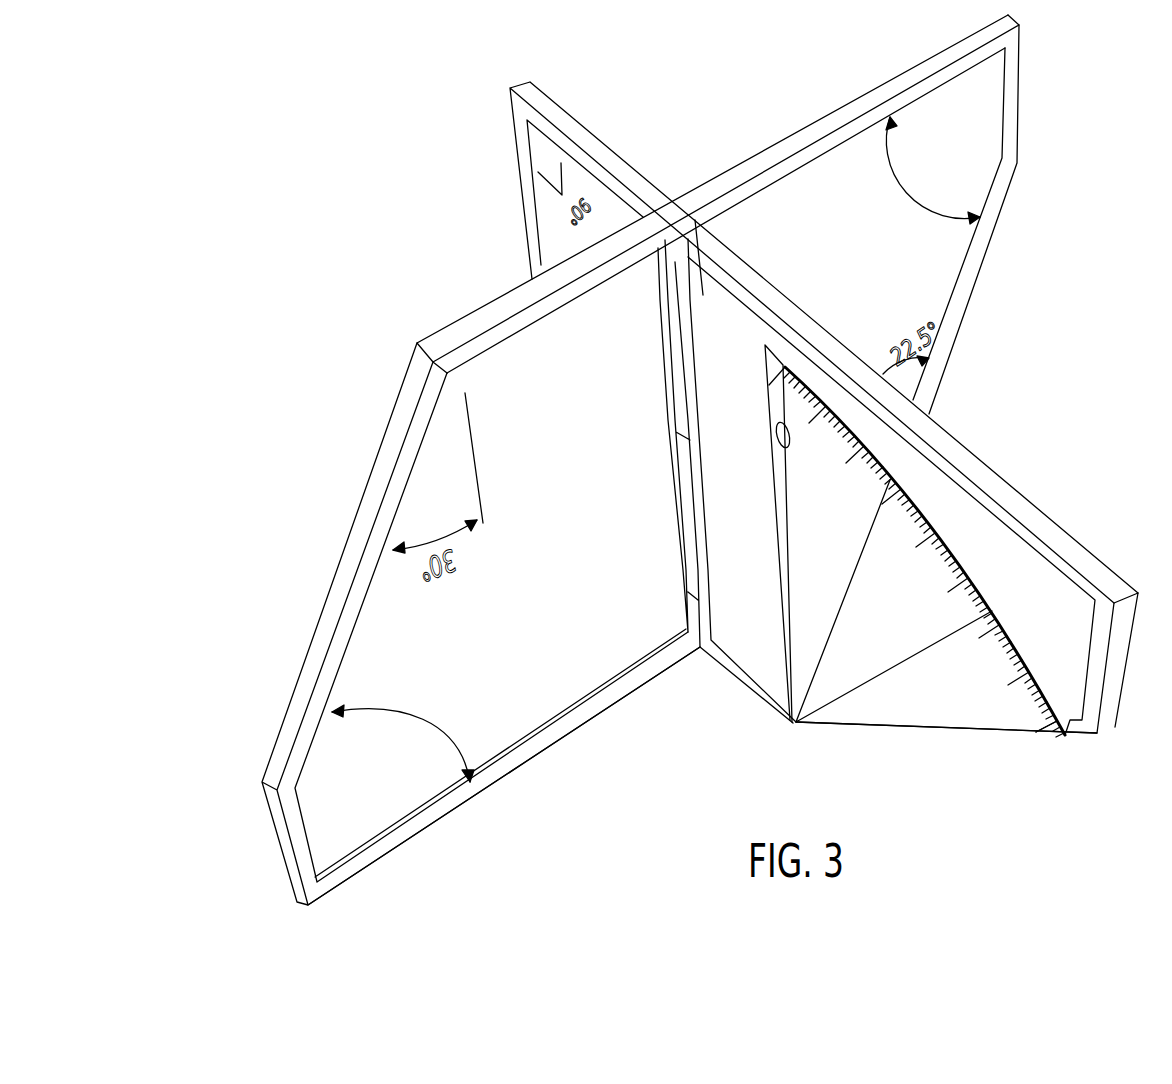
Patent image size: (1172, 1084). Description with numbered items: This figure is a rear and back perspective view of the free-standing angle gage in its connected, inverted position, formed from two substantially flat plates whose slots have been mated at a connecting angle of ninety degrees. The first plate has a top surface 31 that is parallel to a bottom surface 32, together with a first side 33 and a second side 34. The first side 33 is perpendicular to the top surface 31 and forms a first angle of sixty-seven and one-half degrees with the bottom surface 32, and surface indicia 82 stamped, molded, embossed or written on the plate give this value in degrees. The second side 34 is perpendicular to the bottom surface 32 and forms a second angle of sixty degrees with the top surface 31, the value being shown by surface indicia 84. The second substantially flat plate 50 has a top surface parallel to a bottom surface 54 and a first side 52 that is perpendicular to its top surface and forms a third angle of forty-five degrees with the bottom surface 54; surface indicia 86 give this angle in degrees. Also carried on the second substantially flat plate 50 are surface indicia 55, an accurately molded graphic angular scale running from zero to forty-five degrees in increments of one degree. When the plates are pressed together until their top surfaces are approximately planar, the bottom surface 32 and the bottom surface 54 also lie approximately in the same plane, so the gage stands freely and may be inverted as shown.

The top surface 31 is at (497, 312).
The bottom surface 32 is at (613, 707).
The first side 33 is at (1020, 112).
The second side 34 is at (348, 572).
The second substantially flat plate 50 is at (995, 537).
The first side 52 is at (927, 722).
The bottom surface 54 is at (717, 660).
The surface indicia 55 is at (992, 610).
The surface indicia 82 is at (920, 230).
The surface indicia 84 is at (472, 694).
The surface indicia 86 is at (1022, 722).